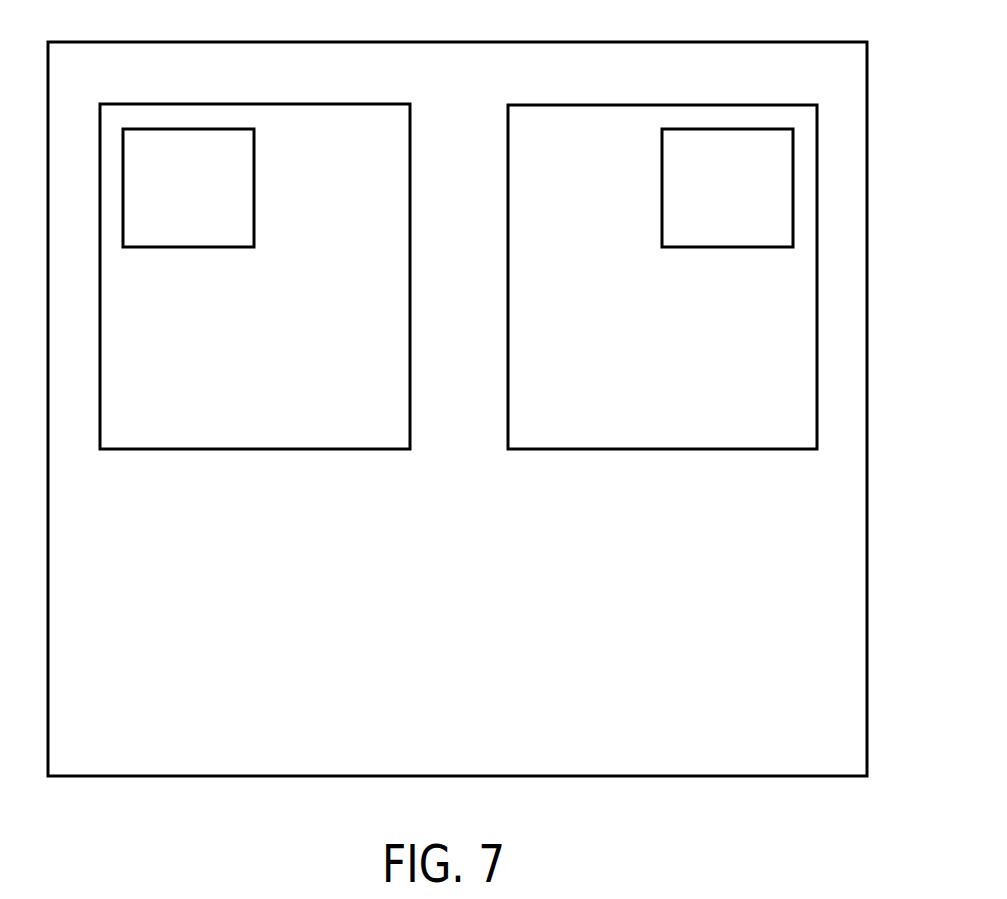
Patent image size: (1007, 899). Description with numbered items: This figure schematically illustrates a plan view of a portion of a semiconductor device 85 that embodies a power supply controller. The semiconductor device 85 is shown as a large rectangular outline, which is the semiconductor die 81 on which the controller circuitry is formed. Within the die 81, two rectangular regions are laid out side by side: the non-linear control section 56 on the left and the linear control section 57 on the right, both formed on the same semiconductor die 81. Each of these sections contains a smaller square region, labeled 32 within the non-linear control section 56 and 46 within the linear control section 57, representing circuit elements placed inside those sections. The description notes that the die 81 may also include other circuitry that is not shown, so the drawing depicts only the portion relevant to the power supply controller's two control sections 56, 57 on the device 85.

The semiconductor die 81 is at (868, 361).
The non-linear control section 56 is at (232, 451).
The linear control section 57 is at (671, 451).
The first element 32 is at (176, 250).
The second element 46 is at (689, 250).
The semiconductor device 85 is at (988, 717).